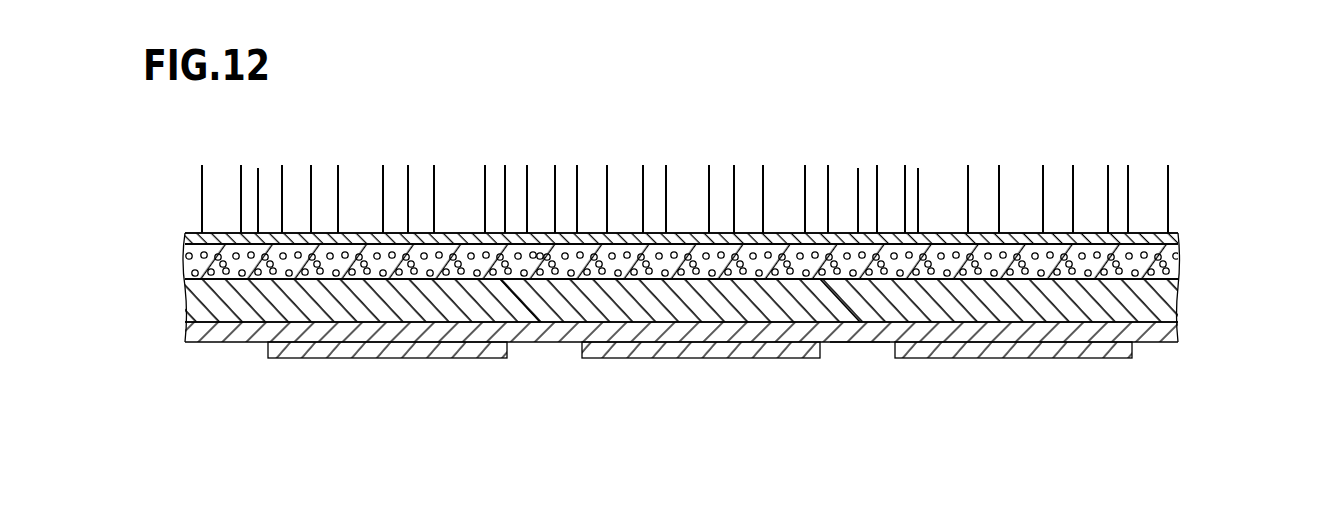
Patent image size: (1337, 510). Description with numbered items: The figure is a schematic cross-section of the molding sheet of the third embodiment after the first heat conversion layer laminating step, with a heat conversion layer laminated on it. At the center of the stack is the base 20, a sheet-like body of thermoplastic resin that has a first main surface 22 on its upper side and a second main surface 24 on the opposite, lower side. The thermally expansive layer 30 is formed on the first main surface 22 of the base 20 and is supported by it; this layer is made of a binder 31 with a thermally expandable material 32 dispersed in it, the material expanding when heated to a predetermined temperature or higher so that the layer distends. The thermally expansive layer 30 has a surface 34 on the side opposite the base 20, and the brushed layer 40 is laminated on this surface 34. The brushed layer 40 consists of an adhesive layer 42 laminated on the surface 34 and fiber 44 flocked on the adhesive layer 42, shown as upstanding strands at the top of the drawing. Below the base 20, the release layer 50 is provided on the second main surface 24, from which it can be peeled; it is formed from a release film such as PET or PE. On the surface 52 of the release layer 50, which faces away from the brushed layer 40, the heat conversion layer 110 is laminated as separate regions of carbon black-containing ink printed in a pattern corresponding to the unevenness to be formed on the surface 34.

The base 20 is at (1179, 312).
The first main surface 22 is at (835, 292).
The second main surface 24 is at (535, 313).
The thermally expansive layer 30 is at (1249, 247).
The binder 31 is at (1179, 257).
The thermally expandable material 32 is at (1179, 277).
The surface of the thermally expansive layer 34 is at (539, 252).
The brushed layer 40 is at (1249, 172).
The adhesive layer 42 is at (1179, 236).
The fiber 44 is at (1170, 185).
The release layer 50 is at (1179, 337).
The surface of the release layer 52 is at (860, 342).
The heat conversion layer 110 is at (387, 358).